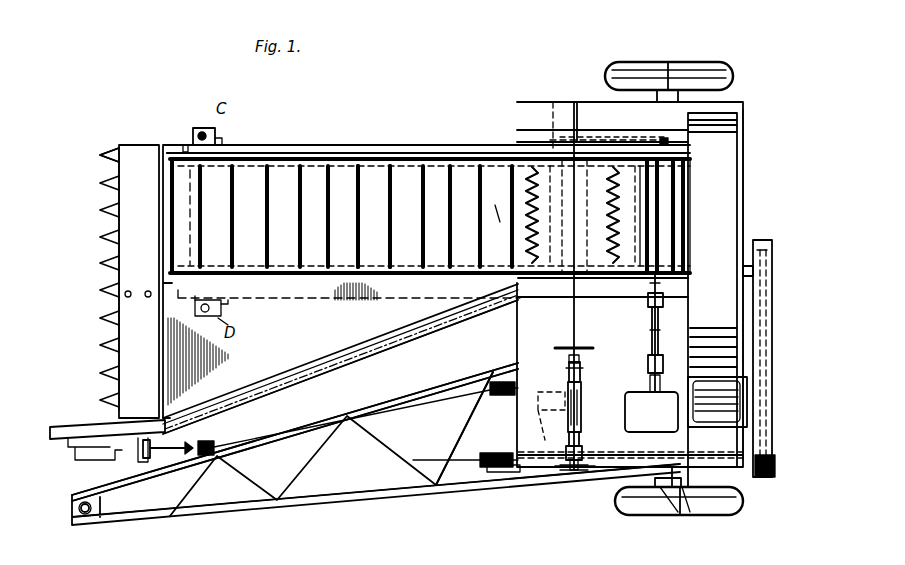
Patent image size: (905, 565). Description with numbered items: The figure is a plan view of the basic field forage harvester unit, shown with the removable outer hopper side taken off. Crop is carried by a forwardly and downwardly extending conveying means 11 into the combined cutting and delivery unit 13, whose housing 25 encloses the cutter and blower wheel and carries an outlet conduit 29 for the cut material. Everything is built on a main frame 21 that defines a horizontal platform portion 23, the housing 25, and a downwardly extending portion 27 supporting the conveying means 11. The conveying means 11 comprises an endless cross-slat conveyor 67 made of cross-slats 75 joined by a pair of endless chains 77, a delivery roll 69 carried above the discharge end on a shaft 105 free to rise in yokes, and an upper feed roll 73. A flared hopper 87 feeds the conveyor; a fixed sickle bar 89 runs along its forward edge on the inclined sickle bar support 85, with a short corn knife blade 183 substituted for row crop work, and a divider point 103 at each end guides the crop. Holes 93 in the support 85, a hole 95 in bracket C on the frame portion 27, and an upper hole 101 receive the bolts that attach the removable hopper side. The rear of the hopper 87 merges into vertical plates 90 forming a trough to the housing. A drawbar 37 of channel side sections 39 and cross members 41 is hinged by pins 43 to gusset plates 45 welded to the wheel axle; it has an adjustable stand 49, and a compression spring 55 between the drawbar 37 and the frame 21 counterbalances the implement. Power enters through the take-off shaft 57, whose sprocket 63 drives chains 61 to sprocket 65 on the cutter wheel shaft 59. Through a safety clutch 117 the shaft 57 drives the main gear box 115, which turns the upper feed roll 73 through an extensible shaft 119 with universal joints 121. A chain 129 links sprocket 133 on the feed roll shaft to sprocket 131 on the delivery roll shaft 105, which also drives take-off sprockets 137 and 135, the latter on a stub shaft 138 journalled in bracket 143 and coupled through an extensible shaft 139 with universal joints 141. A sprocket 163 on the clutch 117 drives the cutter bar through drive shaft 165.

The conveying means 11 is at (499, 215).
The cutting and delivery unit 13 is at (746, 178).
The main frame 21 is at (505, 331).
The horizontal platform portion 23 is at (634, 342).
The housing 25 is at (718, 192).
The forwardly and downwardly extending portion 27 is at (428, 217).
The outlet conduit 29 is at (735, 401).
The drawbar 37 is at (262, 518).
The channel side sections 39 is at (125, 500).
The cross members 41 is at (330, 458).
The hinge pins 43 is at (660, 487).
The gusset plates 45 is at (678, 487).
The adjustable stand 49 is at (88, 513).
The compression spring 55 is at (508, 425).
The power take-off shaft 57 is at (490, 472).
The shaft 59 is at (743, 270).
The chains 61 is at (765, 335).
The sprocket 63 is at (776, 462).
The sprocket 65 is at (768, 257).
The endless cross-slat conveyor 67 is at (330, 165).
The delivery roll 69 is at (513, 140).
The upper feed roll 73 is at (665, 219).
The cross-slats 75 is at (382, 165).
The endless chains 77 is at (258, 160).
The sickle bar support 85 is at (117, 328).
The hopper 87 is at (390, 330).
The fixed sickle bar 89 is at (105, 182).
The vertically disposed plates 90 is at (532, 150).
The holes 93 is at (148, 150).
The hole 95 is at (200, 130).
The registering hole 101 is at (580, 216).
The divider point 103 is at (95, 423).
The delivery roll shaft 105 is at (568, 145).
The main gear box 115 is at (665, 425).
The safety clutch 117 is at (550, 420).
The extensible power transmission shaft 119 is at (648, 318).
The universal joints 121 is at (664, 296).
The chain 129 is at (630, 135).
The sprocket 131 is at (546, 119).
The sprocket 133 is at (664, 137).
The power take-off sprocket 135 is at (582, 470).
The power take-off sprocket 137 is at (555, 348).
The stub shaft 138 is at (574, 472).
The extensible shaft 139 is at (582, 420).
The universal joints 141 is at (582, 380).
The bracket 143 is at (562, 470).
The sprocket 163 is at (568, 380).
The drive shaft 165 is at (290, 425).
The cutter blade 183 is at (117, 243).